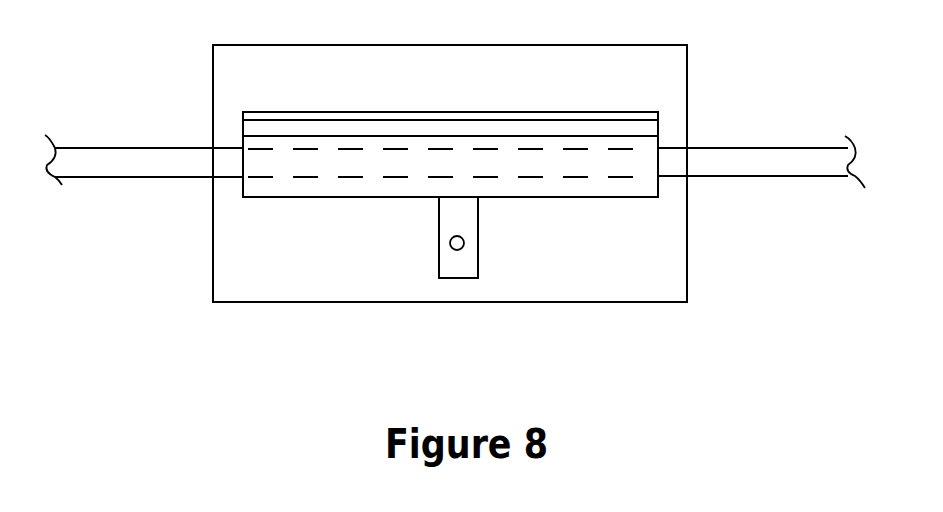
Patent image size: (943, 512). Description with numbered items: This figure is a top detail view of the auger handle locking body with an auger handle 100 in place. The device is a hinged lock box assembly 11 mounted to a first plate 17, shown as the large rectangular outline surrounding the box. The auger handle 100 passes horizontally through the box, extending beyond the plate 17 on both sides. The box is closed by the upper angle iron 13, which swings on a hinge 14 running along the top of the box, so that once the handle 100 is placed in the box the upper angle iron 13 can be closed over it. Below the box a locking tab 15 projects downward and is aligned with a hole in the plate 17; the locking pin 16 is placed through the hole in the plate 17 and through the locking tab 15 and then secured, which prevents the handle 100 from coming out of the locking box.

The hinged lock box assembly 11 is at (595, 200).
The upper angle iron 13 is at (330, 205).
The hinge 14 is at (513, 113).
The locking tab 15 is at (438, 238).
The locking pin 16 is at (465, 242).
The first plate 17 is at (212, 76).
The auger handle 100 is at (200, 180).